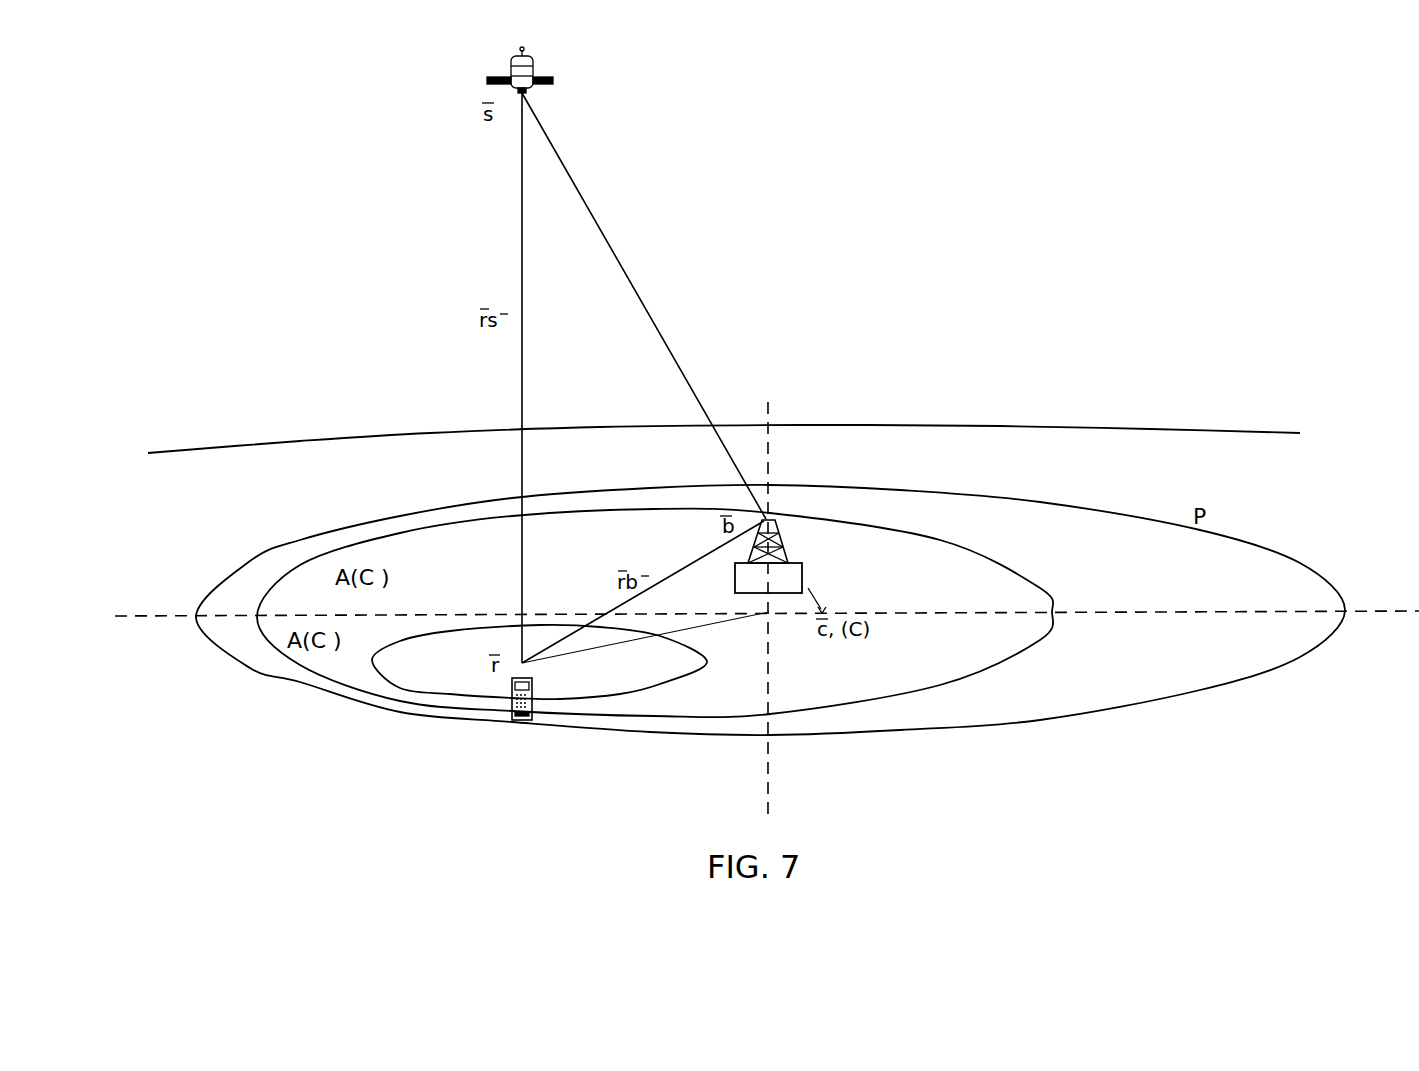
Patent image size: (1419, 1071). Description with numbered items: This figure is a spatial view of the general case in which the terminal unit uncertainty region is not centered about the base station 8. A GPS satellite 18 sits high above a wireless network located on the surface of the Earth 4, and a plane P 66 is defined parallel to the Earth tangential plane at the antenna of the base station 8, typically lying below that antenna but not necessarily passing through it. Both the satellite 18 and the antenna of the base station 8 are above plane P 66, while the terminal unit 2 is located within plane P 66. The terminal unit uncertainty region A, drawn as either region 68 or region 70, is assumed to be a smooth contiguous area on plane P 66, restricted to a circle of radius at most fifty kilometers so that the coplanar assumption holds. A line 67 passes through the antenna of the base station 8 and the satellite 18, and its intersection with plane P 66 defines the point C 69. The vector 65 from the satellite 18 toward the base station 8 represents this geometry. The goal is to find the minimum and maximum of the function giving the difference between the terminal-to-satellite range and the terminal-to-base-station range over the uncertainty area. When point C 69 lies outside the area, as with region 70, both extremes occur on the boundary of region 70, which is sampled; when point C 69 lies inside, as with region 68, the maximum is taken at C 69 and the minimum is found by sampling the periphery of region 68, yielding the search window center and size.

The terminal unit 2 is at (520, 721).
The Earth 4 is at (915, 426).
The base station 8 is at (735, 587).
The GPS satellite 18 is at (545, 72).
The satellite-to-base-station vector 65 is at (652, 315).
The plane P 66 is at (1308, 561).
The line 67 is at (808, 588).
The uncertainty region A 68 is at (983, 672).
The point C 69 is at (822, 611).
The uncertainty region A 70 is at (683, 676).